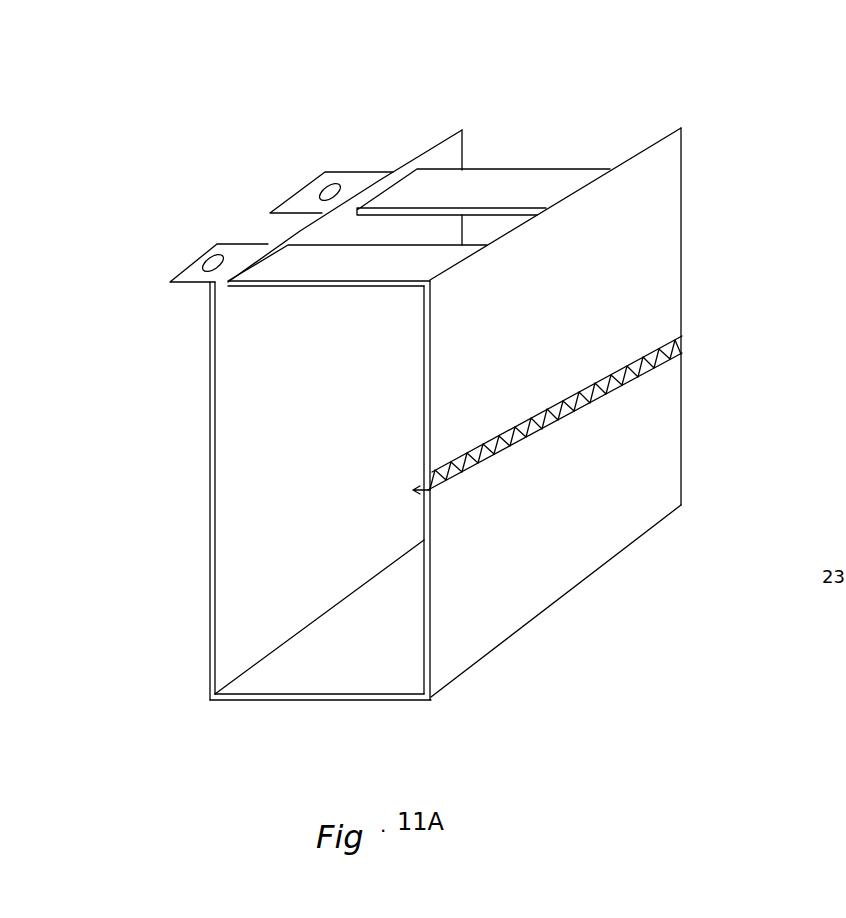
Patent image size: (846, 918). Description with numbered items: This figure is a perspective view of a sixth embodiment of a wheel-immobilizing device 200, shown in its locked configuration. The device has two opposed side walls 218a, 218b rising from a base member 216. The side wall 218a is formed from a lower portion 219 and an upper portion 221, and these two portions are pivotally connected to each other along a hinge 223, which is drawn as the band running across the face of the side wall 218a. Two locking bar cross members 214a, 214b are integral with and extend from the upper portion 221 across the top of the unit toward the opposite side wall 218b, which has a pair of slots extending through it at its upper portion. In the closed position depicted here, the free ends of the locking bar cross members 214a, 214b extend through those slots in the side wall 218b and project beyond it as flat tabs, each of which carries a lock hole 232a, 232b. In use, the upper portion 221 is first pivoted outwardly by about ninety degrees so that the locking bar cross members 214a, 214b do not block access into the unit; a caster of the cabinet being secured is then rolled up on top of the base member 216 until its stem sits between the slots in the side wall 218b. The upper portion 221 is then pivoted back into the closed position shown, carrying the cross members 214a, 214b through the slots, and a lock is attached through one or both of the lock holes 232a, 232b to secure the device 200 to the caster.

The wheel-immobilizing device 200 is at (568, 32).
The locking bar cross member 214a is at (507, 177).
The locking bar cross member 214b is at (383, 267).
The lock hole 232a is at (333, 186).
The lock hole 232b is at (208, 272).
The side wall 218a is at (686, 66).
The side wall 218b is at (240, 497).
The lower portion 219 is at (653, 298).
The upper portion 221 is at (660, 480).
The hinge 223 is at (657, 360).
The base member 216 is at (348, 675).